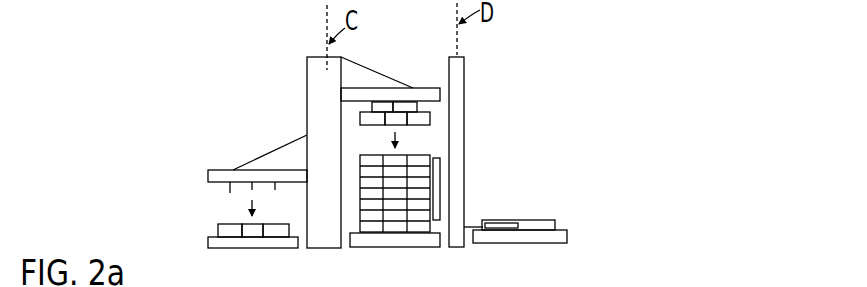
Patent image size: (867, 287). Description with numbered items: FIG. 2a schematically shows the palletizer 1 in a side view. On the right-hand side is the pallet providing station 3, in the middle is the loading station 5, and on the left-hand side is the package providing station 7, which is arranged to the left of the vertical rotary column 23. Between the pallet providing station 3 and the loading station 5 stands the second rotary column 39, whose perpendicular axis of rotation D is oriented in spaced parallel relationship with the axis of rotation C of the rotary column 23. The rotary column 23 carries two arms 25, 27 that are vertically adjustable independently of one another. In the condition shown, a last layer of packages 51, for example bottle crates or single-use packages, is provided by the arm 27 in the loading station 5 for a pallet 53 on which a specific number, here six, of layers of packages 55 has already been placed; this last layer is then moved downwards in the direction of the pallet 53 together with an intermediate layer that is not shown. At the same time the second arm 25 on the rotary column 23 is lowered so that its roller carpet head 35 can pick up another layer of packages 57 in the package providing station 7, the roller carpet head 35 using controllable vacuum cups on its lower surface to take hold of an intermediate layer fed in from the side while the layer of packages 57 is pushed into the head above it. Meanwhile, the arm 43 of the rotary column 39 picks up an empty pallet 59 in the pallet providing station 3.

The palletizer 1 is at (554, 128).
The pallet providing station 3 is at (510, 247).
The loading station 5 is at (391, 250).
The package providing station 7 is at (245, 253).
The rotary column 23 is at (307, 70).
The arm 25 is at (222, 170).
The arm 27 is at (428, 87).
The roller carpet head 35 is at (230, 193).
The rotary column 39 is at (465, 63).
The arm 43 is at (474, 227).
The layer of packages 51 is at (431, 118).
The pallet 53 is at (440, 190).
The layers of packages 55 is at (428, 228).
The layer of packages 57 is at (217, 228).
The empty pallet 59 is at (550, 220).